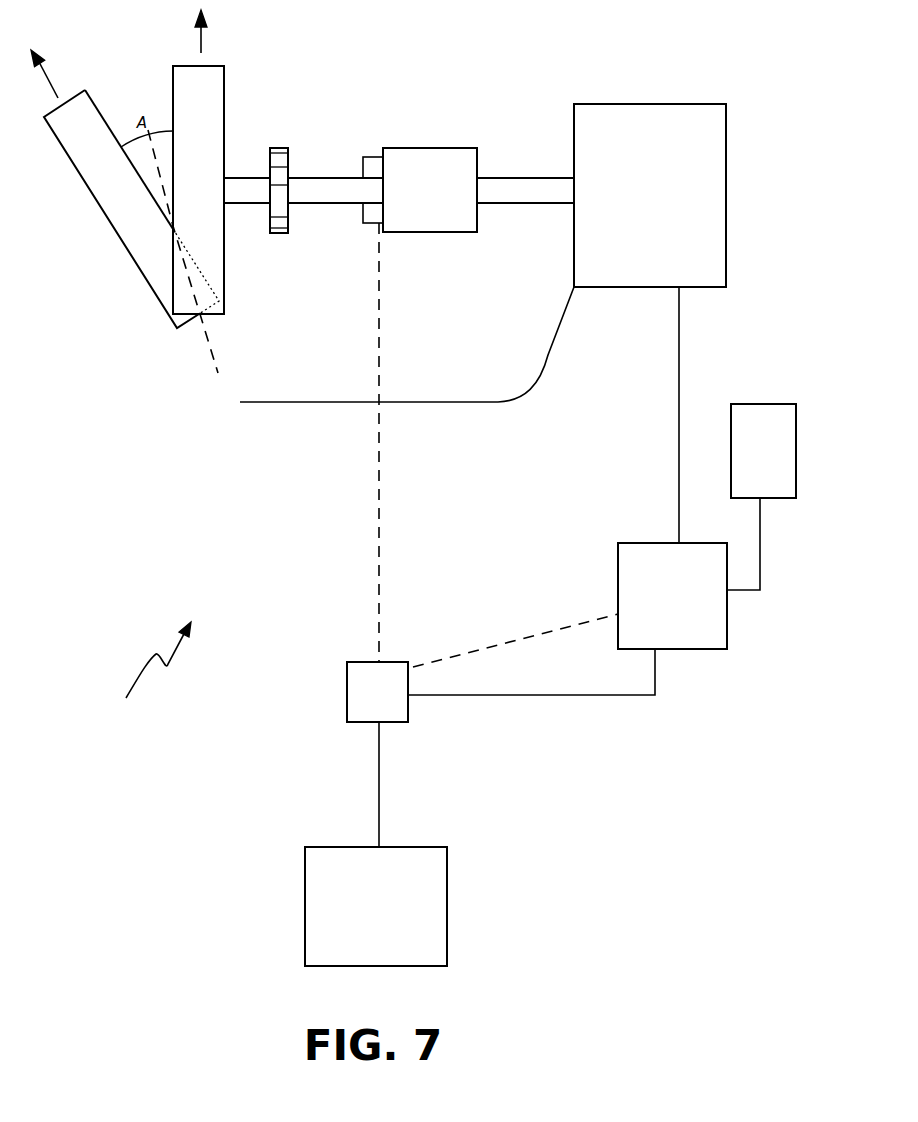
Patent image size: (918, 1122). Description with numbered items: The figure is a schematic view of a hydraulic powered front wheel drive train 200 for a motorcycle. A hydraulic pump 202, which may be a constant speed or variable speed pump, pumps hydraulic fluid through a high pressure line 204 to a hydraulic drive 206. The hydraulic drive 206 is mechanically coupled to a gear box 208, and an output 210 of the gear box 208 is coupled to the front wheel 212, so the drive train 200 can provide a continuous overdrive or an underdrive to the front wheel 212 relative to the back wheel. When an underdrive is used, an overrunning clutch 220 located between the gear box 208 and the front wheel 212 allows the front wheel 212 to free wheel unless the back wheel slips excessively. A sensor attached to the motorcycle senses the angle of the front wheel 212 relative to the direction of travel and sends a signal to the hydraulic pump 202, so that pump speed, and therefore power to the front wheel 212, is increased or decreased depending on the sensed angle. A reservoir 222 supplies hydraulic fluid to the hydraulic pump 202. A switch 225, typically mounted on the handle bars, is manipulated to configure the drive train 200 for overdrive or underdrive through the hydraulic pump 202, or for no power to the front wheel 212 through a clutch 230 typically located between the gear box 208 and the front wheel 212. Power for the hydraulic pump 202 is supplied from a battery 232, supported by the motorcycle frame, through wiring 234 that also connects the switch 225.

The front wheel drive train 200 is at (147, 672).
The hydraulic pump 202 is at (712, 652).
The high pressure line 204 is at (679, 405).
The hydraulic drive 206 is at (643, 103).
The gear box 208 is at (435, 148).
The output 210 is at (335, 177).
The front wheel 212 is at (105, 217).
The overrunning clutch 220 is at (280, 147).
The reservoir 222 is at (780, 403).
The switch 225 is at (347, 698).
The clutch 230 is at (367, 225).
The battery 232 is at (304, 904).
The wiring 234 is at (602, 697).